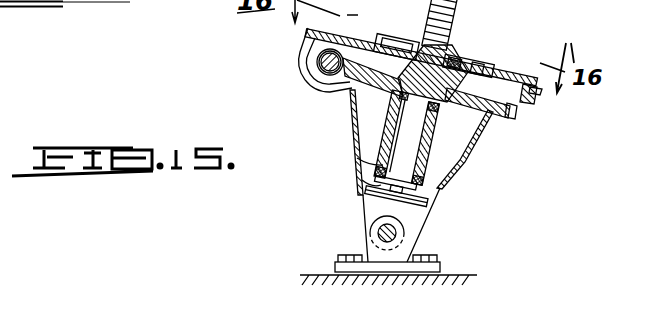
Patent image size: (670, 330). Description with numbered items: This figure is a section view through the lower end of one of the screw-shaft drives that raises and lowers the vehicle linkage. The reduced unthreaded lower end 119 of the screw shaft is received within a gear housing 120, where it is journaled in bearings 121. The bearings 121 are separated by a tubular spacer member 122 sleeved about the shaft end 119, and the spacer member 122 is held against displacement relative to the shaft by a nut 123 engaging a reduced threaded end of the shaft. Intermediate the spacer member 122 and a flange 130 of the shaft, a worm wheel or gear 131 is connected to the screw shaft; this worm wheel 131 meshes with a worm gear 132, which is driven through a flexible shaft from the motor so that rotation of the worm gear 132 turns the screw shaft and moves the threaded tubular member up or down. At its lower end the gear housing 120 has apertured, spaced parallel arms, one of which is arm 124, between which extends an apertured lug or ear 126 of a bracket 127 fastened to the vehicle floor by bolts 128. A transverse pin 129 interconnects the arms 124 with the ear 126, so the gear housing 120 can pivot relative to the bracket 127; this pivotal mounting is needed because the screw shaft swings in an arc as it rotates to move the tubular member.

The reduced unthreaded lower end 119 is at (407, 127).
The gear housing 120 is at (352, 100).
The bearings 121 is at (433, 165).
The tubular spacer member 122 is at (370, 148).
The nut 123 is at (433, 193).
The arm 124 is at (362, 205).
The apertured lug or ear 126 is at (402, 232).
The bracket 127 is at (400, 268).
The bolts 128 is at (352, 267).
The transverse pin 129 is at (380, 232).
The flange 130 is at (473, 68).
The worm wheel or gear 131 is at (445, 118).
The worm gear 132 is at (314, 70).